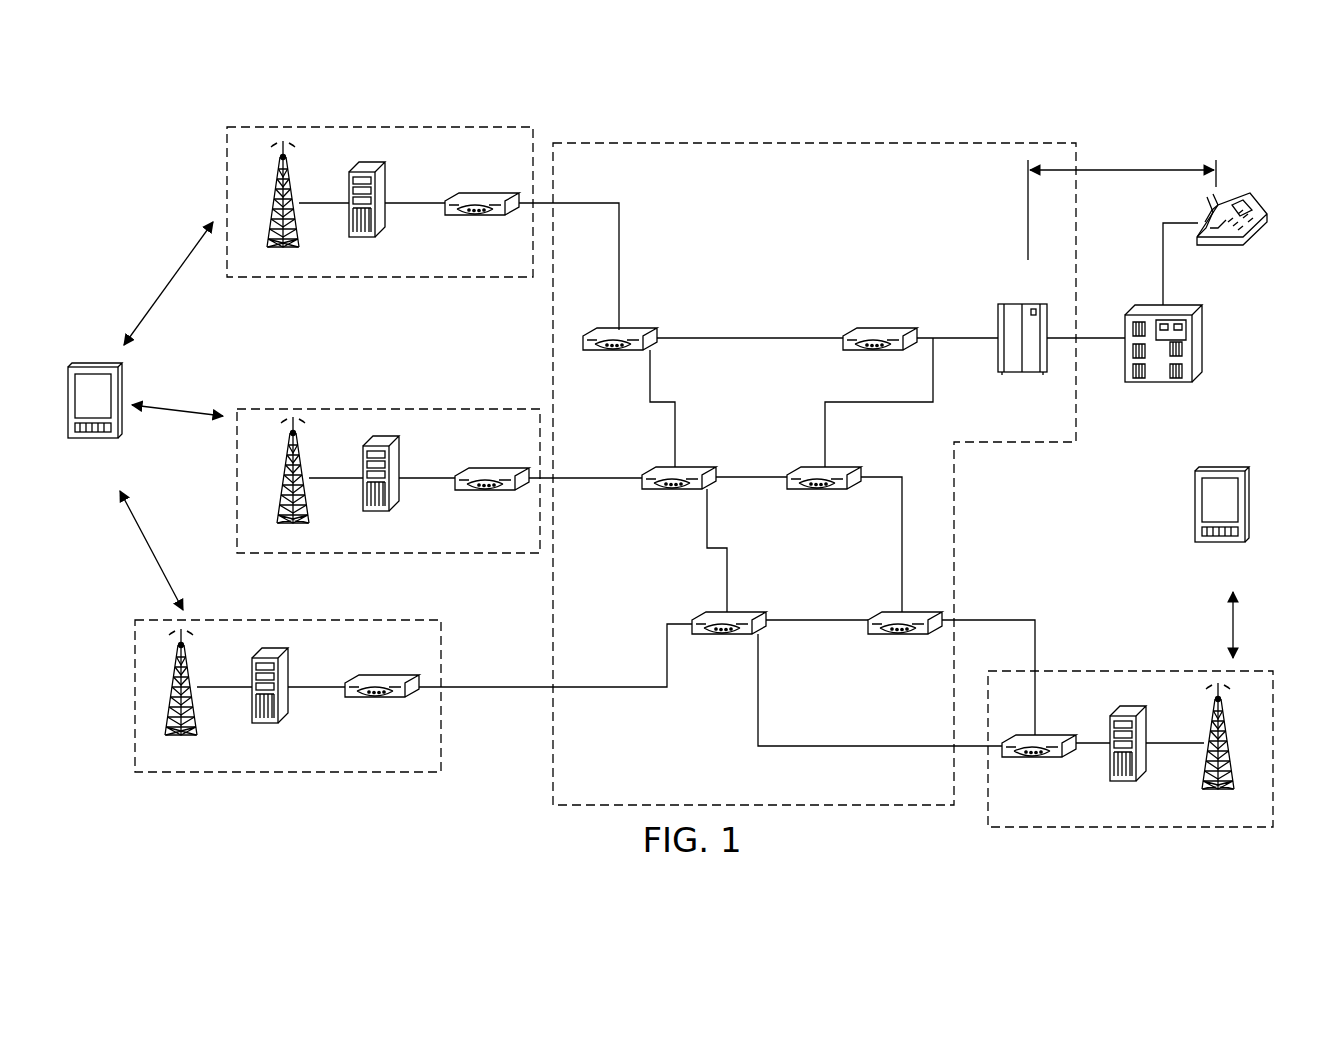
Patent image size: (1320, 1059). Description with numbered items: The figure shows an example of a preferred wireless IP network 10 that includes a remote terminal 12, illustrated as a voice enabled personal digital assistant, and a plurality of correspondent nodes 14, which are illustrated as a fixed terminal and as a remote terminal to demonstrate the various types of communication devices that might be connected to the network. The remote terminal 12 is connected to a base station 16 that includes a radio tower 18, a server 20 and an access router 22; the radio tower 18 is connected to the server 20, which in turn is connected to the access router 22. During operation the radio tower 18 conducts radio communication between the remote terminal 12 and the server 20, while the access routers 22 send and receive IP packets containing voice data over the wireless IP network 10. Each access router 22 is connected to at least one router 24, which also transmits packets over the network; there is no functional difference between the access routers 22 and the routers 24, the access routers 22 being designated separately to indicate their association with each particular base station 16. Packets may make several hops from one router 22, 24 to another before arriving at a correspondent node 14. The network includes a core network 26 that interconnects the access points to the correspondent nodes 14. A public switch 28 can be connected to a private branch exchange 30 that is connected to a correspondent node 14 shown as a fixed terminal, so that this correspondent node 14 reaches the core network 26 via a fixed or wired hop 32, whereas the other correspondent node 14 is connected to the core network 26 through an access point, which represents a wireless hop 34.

The wireless IP network 10 is at (660, 110).
The remote terminal 12 is at (93, 363).
The correspondent node 14 is at (1245, 192).
The base station 16 is at (283, 130).
The radio tower 18 is at (270, 205).
The server 20 is at (368, 162).
The access router 22 is at (488, 193).
The router 24 is at (628, 328).
The core network 26 is at (825, 143).
The public switch 28 is at (1024, 304).
The private branch exchange 30 is at (1196, 338).
The fixed or wired hop 32 is at (1128, 122).
The wireless hop 34 is at (1293, 578).